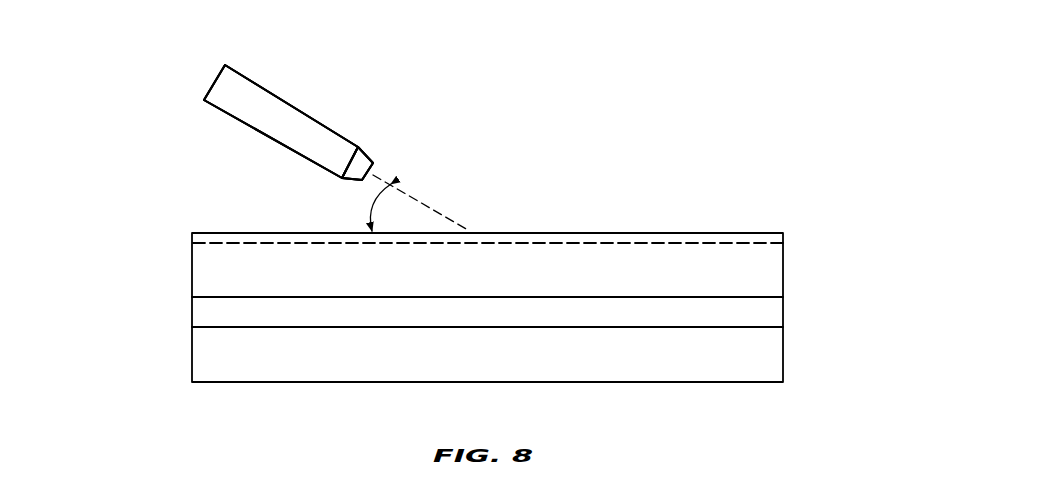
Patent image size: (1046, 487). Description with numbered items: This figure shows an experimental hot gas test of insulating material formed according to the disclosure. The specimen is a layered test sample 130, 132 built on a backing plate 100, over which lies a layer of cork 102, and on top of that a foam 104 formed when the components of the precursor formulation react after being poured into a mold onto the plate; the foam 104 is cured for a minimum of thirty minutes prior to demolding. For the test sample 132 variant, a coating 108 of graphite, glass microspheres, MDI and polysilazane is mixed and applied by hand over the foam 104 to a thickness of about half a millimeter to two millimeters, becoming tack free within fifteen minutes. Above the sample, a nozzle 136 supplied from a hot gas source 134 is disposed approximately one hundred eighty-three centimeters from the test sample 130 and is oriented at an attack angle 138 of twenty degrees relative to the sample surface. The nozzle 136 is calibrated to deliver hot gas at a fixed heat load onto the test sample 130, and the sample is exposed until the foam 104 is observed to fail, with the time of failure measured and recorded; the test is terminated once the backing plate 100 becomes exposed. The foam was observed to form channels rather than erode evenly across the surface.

The backing plate 100 is at (783, 355).
The layer of cork 102 is at (783, 312).
The foam 104 is at (783, 263).
The coating 108 is at (783, 235).
The test sample 130 is at (158, 166).
The test sample 132 is at (158, 166).
The hot gas source 134 is at (283, 98).
The nozzle 136 is at (370, 153).
The attack angle 138 is at (346, 207).